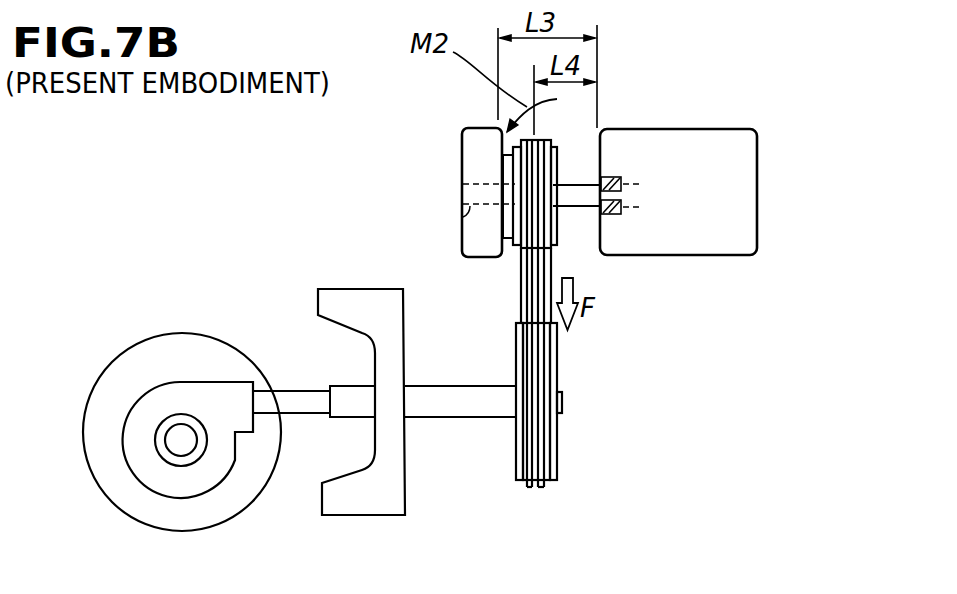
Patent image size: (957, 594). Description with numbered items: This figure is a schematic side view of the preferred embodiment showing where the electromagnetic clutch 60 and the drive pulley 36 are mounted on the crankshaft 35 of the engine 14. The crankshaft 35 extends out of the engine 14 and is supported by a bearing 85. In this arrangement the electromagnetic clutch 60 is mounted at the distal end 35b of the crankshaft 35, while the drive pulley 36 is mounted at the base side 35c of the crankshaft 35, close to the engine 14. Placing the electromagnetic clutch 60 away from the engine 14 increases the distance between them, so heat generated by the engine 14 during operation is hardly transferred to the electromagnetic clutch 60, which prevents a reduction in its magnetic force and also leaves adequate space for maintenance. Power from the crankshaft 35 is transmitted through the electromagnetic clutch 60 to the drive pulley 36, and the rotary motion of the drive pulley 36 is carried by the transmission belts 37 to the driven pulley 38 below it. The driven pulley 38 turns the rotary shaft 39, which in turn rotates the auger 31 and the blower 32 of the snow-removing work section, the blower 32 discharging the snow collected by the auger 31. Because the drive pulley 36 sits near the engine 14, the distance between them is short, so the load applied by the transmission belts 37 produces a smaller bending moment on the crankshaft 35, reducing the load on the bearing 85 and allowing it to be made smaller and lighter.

The engine 14 is at (713, 140).
The bearing 85 is at (603, 177).
The electromagnetic clutch 60 is at (468, 143).
The distal end 35b is at (462, 217).
The drive pulley 36 is at (520, 248).
The crankshaft 35 is at (564, 206).
The transmission belts 37 is at (528, 388).
The driven pulley 38 is at (557, 445).
The base side 35c is at (588, 207).
The rotary shaft 39 is at (472, 412).
The blower 32 is at (347, 289).
The auger 31 is at (168, 333).